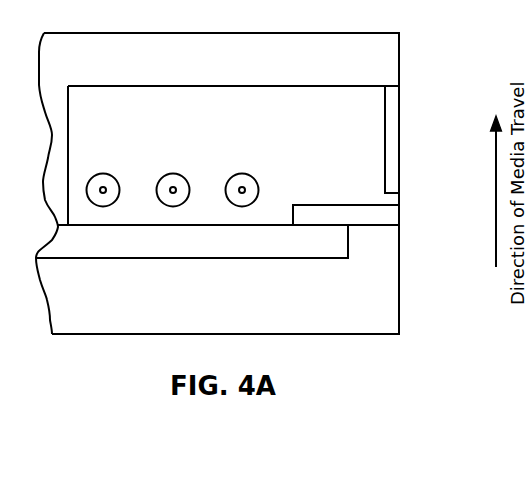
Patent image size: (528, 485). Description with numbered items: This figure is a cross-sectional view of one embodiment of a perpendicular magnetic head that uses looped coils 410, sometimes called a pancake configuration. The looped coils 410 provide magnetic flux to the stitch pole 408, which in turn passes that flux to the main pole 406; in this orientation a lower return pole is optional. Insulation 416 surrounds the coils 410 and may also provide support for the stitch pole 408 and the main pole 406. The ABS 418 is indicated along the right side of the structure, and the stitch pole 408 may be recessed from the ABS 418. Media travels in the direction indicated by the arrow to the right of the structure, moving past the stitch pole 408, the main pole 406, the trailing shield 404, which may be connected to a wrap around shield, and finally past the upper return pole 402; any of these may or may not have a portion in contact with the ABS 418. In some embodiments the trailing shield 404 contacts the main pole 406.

The upper return pole 402 is at (229, 59).
The trailing shield 404 is at (402, 122).
The main pole 406 is at (402, 210).
The stitch pole 408 is at (192, 241).
The looped coils 410 is at (98, 174).
The insulation 416 is at (206, 155).
The ABS 418 is at (408, 50).